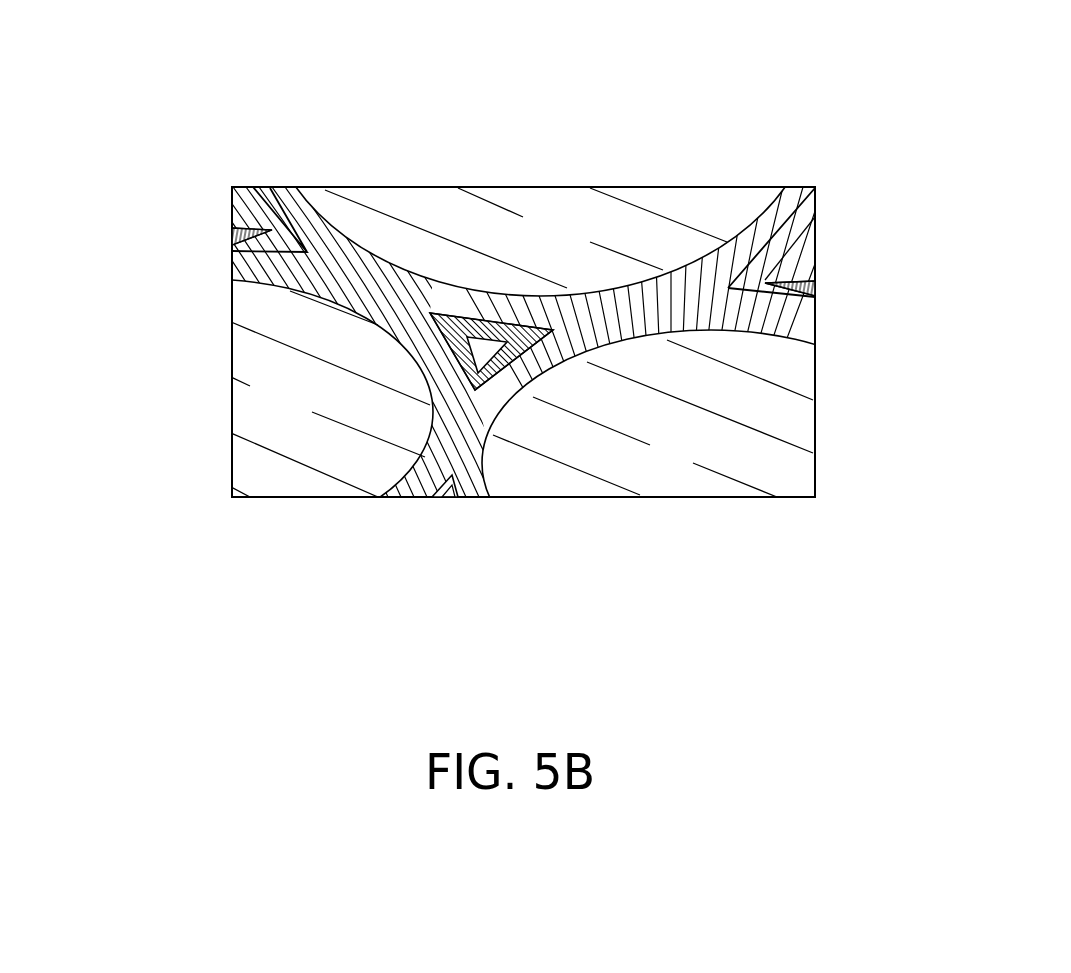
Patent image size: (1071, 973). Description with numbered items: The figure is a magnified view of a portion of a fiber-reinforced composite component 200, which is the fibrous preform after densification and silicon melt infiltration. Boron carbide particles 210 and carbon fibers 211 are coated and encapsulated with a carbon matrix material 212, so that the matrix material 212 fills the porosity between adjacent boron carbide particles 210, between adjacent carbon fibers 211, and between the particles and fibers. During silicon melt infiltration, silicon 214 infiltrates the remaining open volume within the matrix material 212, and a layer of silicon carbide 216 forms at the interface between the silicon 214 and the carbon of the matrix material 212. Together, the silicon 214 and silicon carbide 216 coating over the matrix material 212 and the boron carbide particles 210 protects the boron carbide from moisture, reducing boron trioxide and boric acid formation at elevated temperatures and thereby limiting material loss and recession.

The fiber-reinforced composite component 200 is at (150, 99).
The boron carbide particles 210 is at (305, 402).
The carbon fibers 211 is at (578, 233).
The matrix material 212 is at (318, 227).
The silicon 214 is at (246, 206).
The silicon carbide 216 is at (262, 195).